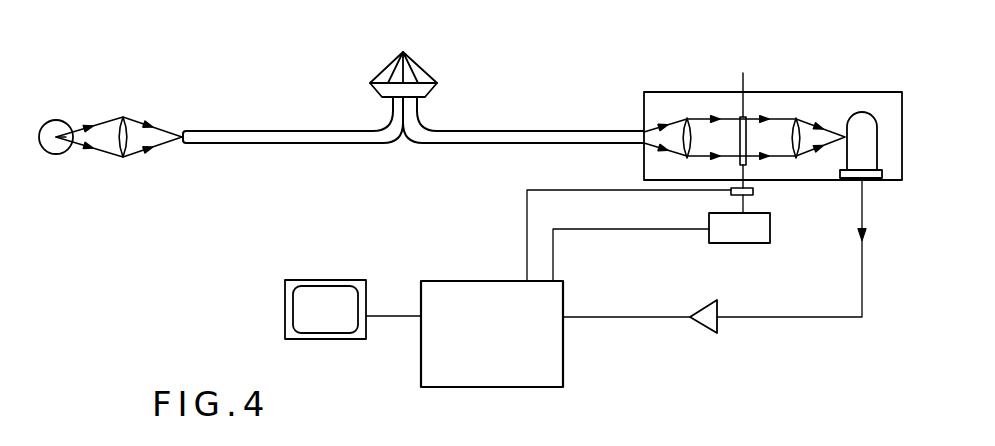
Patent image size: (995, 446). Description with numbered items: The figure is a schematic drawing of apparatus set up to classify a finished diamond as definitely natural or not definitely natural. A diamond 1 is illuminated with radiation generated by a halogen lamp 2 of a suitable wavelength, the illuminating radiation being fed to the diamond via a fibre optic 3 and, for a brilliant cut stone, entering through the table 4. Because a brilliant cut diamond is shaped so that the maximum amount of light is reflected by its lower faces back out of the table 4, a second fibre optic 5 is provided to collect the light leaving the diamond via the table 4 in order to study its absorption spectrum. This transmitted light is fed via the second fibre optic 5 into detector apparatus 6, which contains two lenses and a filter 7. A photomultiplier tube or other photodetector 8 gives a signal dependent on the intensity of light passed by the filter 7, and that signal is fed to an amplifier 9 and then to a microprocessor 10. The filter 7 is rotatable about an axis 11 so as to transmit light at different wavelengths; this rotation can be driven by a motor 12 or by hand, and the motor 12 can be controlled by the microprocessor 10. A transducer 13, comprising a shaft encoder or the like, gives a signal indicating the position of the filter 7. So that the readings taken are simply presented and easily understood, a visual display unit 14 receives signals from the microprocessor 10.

The diamond 1 is at (393, 76).
The halogen lamp 2 is at (57, 120).
The fibre optic 3 is at (322, 144).
The table 4 is at (424, 98).
The second fibre optic 5 is at (502, 145).
The detector apparatus 6 is at (693, 92).
The filter 7 is at (748, 140).
The photodetector 8 is at (852, 125).
The amplifier 9 is at (712, 323).
The microprocessor 10 is at (520, 378).
The axis 11 is at (744, 74).
The motor 12 is at (748, 236).
The transducer 13 is at (753, 193).
The visual display unit 14 is at (307, 303).